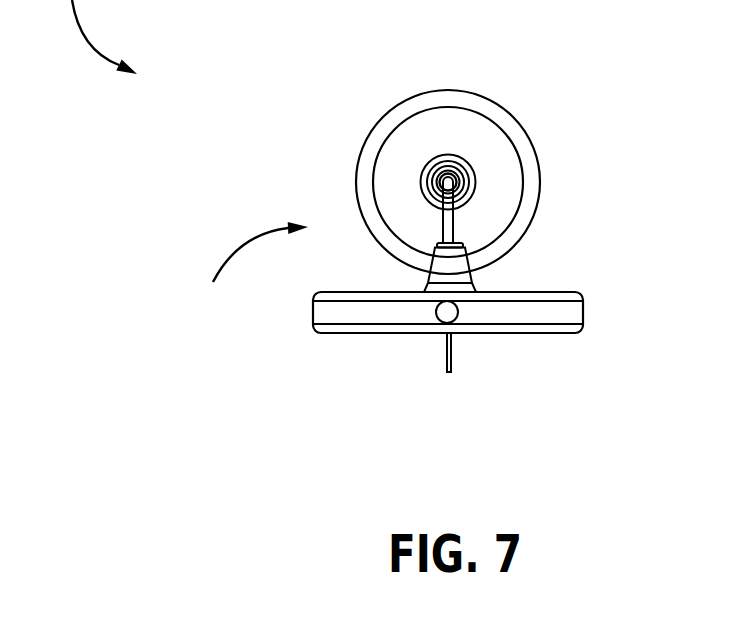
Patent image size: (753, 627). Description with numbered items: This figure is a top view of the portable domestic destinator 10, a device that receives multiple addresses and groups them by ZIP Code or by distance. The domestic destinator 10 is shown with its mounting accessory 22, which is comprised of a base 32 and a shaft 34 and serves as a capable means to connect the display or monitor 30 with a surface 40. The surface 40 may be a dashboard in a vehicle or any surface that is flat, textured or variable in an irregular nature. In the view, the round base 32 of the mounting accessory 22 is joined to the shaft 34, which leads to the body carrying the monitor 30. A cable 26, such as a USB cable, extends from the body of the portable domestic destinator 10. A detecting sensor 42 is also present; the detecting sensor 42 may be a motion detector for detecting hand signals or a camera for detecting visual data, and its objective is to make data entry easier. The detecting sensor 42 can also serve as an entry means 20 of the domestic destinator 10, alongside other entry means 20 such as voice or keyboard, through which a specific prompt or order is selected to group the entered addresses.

The domestic destinator 10 is at (96, 313).
The entry means 20 is at (548, 297).
The mounting accessory 22 is at (252, 270).
The cable 26 is at (451, 354).
The display or monitor 30 is at (380, 327).
The base 32 is at (527, 153).
The shaft 34 is at (447, 227).
The surface 40 is at (457, 191).
The detecting sensor 42 is at (447, 314).